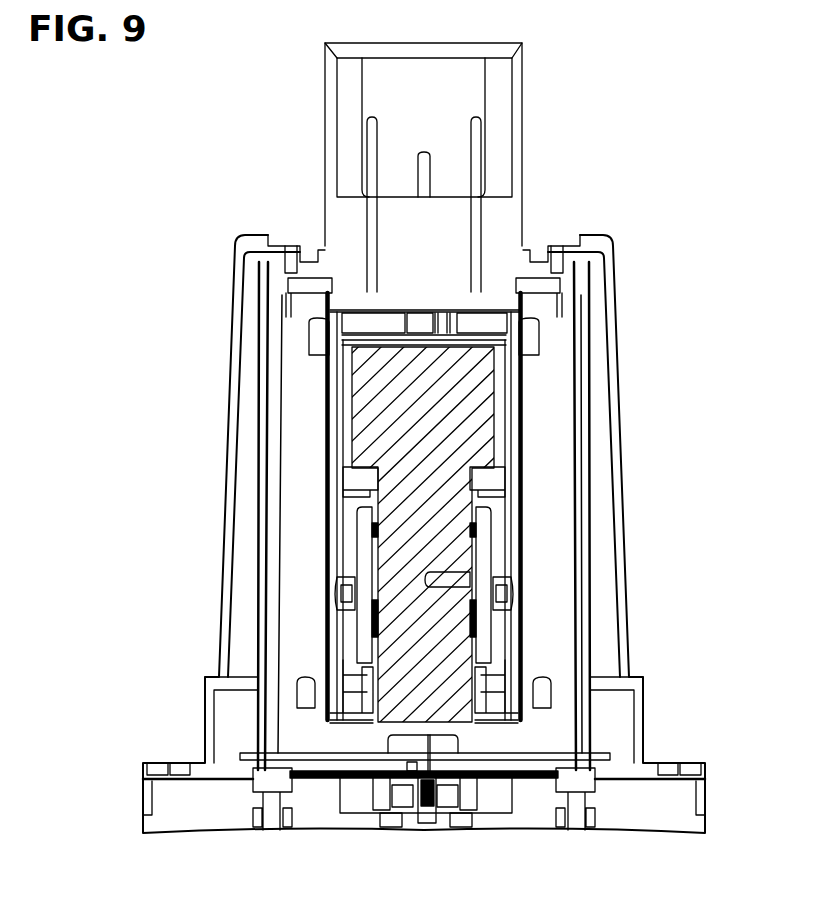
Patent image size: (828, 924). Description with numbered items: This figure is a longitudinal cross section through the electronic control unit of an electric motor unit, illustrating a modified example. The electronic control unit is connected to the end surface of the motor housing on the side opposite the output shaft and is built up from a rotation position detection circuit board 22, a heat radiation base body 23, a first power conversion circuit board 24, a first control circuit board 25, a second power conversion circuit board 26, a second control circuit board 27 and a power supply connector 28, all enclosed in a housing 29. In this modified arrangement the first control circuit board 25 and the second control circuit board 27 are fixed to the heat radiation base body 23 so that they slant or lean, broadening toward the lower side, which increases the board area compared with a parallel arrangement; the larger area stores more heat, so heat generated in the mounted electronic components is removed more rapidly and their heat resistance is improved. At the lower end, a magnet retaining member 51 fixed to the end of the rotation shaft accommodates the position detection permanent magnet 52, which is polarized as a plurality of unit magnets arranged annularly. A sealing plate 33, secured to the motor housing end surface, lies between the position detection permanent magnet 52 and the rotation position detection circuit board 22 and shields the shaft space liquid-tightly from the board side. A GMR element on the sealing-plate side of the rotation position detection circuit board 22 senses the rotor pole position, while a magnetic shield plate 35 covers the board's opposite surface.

The rotation position detection circuit board 22 is at (543, 765).
The heat radiation base body 23 is at (480, 456).
The first power conversion circuit board 24 is at (370, 540).
The first control circuit board 25 is at (337, 411).
The second power conversion circuit board 26 is at (487, 550).
The second control circuit board 27 is at (527, 405).
The power supply connector 28 is at (522, 137).
The housing 29 is at (598, 290).
The sealing plate 33 is at (330, 772).
The magnetic shield plate 35 is at (432, 800).
The magnet retaining member 51 is at (397, 796).
The position detection permanent magnet 52 is at (407, 800).